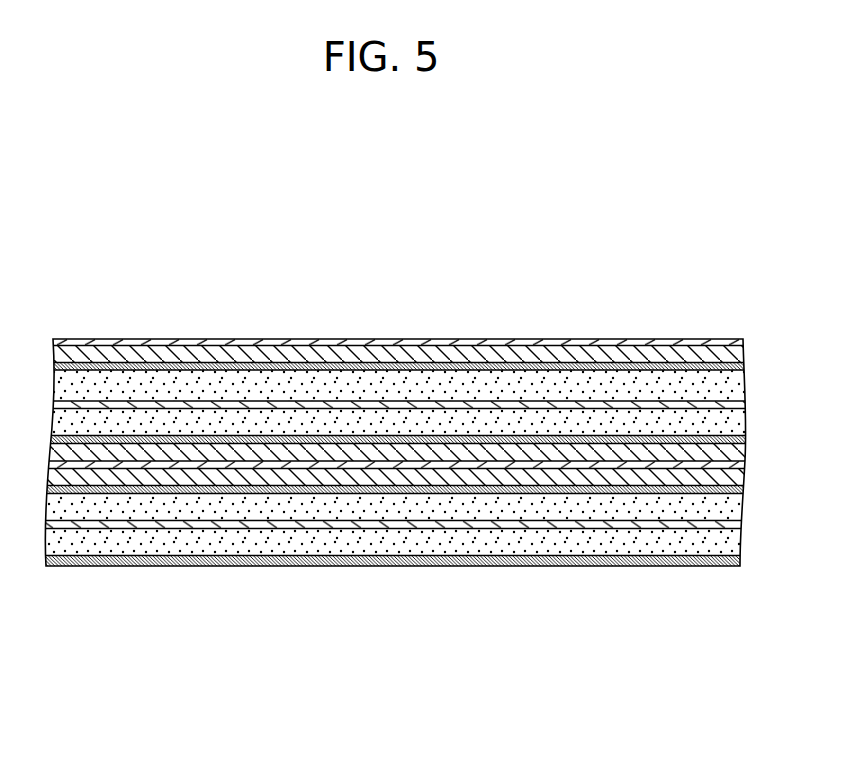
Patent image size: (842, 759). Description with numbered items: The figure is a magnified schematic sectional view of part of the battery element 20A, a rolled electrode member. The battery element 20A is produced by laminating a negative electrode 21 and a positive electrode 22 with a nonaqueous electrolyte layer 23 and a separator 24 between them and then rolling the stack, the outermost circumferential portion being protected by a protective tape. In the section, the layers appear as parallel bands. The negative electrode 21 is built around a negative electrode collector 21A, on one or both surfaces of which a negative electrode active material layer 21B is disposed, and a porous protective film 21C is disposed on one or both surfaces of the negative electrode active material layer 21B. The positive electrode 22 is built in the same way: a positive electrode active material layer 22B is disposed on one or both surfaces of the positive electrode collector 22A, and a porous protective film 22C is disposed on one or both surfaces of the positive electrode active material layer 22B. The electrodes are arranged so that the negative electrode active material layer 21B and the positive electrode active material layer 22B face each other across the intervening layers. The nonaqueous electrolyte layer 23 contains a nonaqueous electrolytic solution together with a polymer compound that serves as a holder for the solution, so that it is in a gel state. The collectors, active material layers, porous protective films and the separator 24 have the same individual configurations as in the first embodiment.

The battery element 20A is at (644, 183).
The negative electrode 21 is at (75, 282).
The negative electrode collector 21A is at (103, 408).
The negative electrode active material layer 21B is at (192, 417).
The porous protective film 21C is at (298, 435).
The positive electrode 22 is at (372, 282).
The positive electrode collector 22A is at (407, 527).
The positive electrode active material layer 22B is at (510, 540).
The porous protective film 22C is at (595, 558).
The nonaqueous electrolyte layer 23 is at (733, 352).
The separator 24 is at (680, 463).